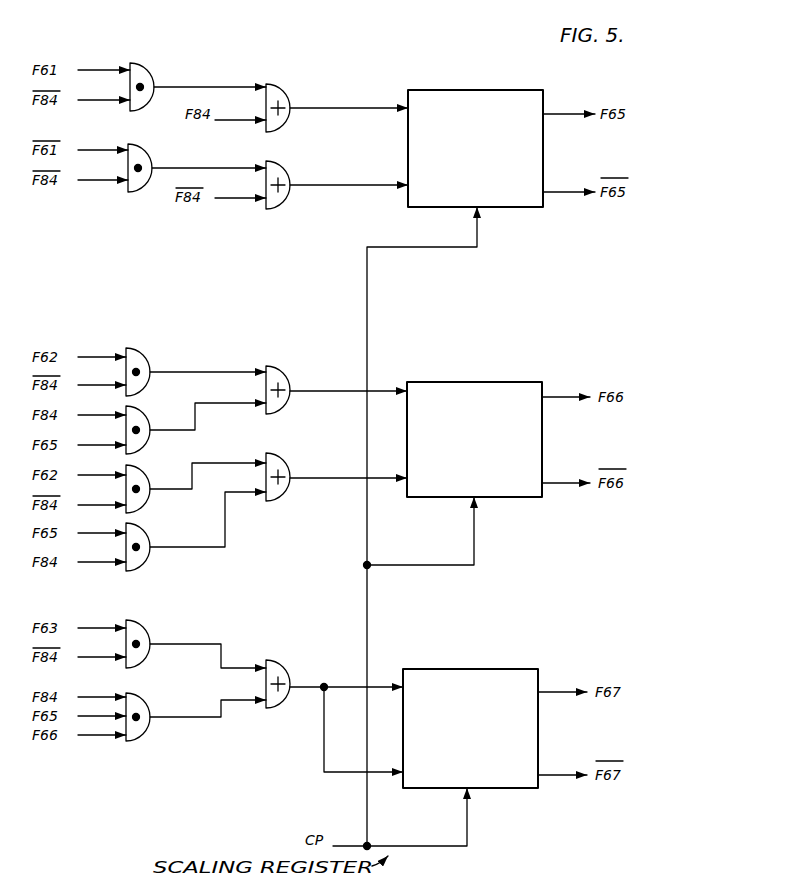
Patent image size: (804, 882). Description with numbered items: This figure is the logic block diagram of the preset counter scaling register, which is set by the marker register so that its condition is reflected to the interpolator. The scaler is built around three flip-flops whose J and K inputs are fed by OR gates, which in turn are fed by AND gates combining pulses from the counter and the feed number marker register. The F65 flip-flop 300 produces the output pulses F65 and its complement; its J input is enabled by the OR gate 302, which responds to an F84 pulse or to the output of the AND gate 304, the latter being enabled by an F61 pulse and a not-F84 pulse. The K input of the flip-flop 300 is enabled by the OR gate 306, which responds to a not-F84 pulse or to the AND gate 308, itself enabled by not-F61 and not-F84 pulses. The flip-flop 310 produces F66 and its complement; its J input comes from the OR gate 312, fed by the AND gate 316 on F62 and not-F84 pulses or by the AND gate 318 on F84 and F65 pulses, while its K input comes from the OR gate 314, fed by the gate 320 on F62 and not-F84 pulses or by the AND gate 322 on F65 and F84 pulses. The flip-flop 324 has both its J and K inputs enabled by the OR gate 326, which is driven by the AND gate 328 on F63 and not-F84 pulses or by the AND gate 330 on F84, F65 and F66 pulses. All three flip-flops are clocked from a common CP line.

The F65 flip-flop 300 is at (493, 96).
The OR gate 302 is at (288, 96).
The AND gate 304 is at (153, 77).
The OR gate 306 is at (288, 176).
The AND gate 308 is at (151, 159).
The flip-flop 310 is at (535, 392).
The OR gate 312 is at (285, 377).
The OR gate 314 is at (285, 463).
The AND gate 316 is at (148, 354).
The AND gate 318 is at (146, 412).
The AND gate 320 is at (144, 474).
The AND gate 322 is at (145, 530).
The flip-flop 324 is at (518, 668).
The OR gate 326 is at (286, 660).
The AND gate 328 is at (147, 627).
The AND gate 330 is at (147, 704).